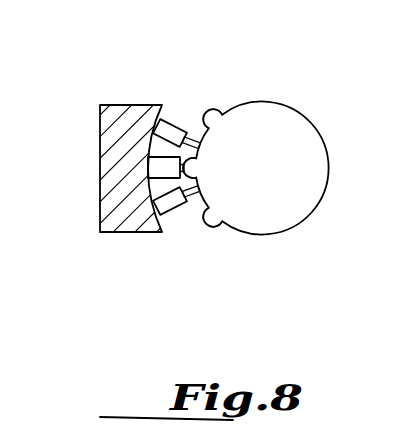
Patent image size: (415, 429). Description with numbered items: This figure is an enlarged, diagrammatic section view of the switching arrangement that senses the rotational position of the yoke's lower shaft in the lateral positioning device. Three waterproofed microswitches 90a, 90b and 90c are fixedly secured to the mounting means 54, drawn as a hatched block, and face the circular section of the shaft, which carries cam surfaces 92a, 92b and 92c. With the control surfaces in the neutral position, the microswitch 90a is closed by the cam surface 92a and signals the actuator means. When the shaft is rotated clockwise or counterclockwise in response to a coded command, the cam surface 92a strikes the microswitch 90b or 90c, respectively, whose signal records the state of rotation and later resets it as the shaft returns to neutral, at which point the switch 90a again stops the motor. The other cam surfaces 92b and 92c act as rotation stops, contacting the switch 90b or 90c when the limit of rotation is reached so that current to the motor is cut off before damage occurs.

The mounting means 54 is at (122, 174).
The microswitch 90a is at (176, 206).
The microswitch 90b is at (176, 131).
The microswitch 90c is at (158, 165).
The cam surface 92a is at (197, 166).
The cam surface 92b is at (214, 110).
The cam surface 92c is at (216, 227).